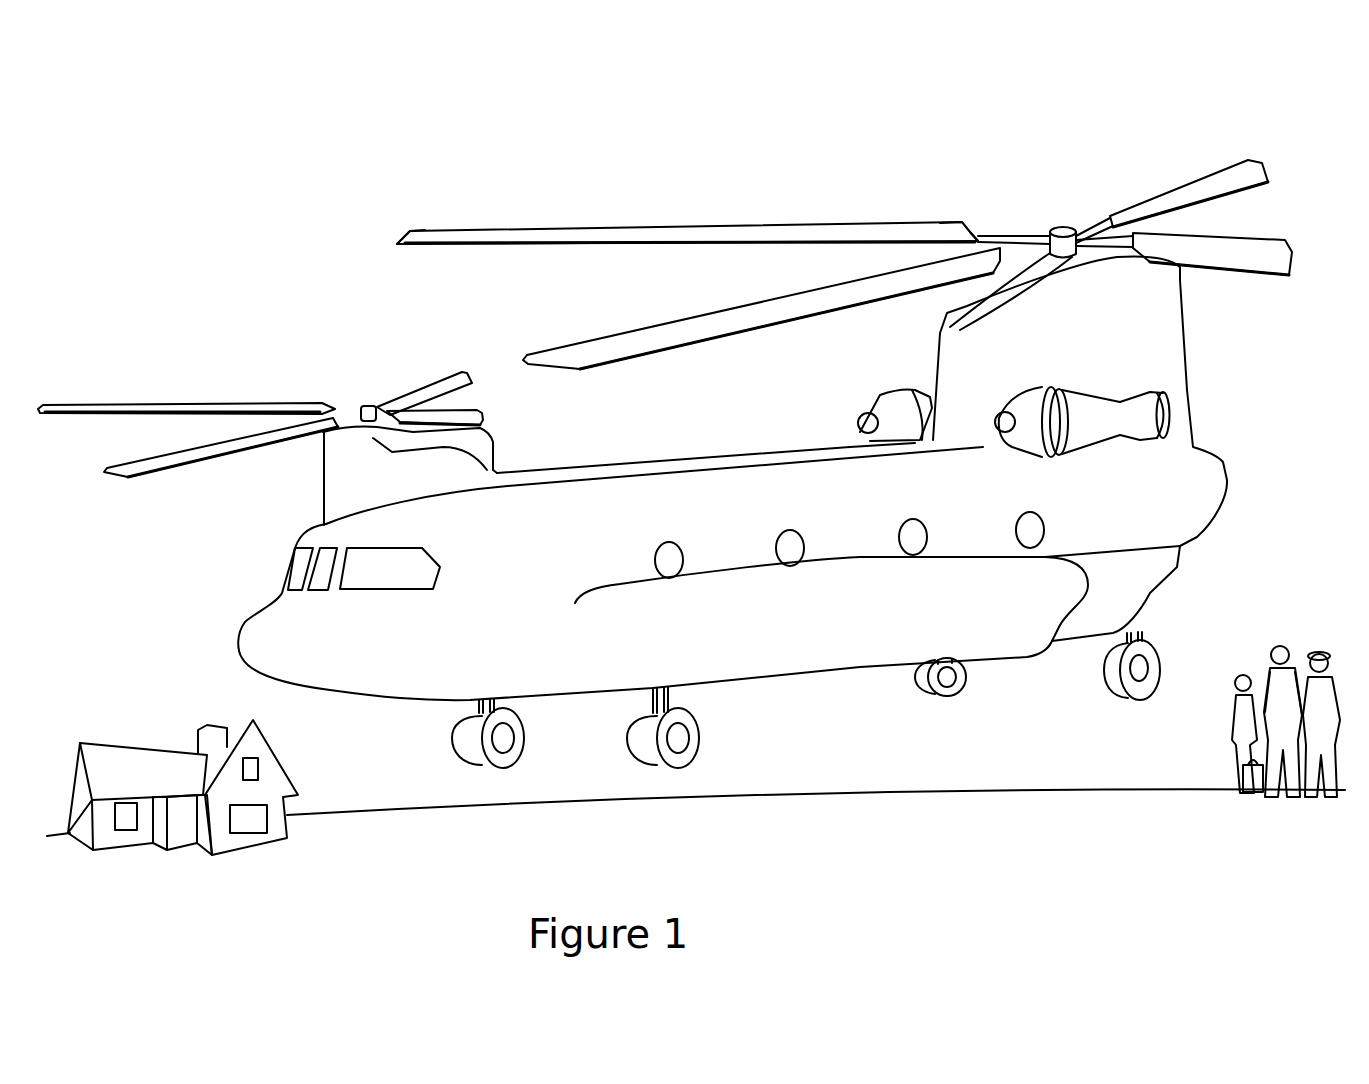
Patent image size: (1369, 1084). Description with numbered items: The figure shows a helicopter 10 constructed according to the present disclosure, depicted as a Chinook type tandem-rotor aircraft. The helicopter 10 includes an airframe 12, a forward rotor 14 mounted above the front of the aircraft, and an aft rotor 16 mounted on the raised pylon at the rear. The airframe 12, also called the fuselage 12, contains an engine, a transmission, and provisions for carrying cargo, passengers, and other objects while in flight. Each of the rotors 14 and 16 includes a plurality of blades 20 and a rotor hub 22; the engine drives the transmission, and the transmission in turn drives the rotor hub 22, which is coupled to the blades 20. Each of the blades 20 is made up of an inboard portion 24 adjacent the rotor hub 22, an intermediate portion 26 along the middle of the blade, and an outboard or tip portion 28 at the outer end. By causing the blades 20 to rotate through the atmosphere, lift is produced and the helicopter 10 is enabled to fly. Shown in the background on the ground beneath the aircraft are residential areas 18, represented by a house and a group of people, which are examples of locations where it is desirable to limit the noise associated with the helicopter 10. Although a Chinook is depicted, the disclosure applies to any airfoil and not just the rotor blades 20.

The helicopter 10 is at (158, 639).
The airframe 12 is at (805, 682).
The forward rotor 14 is at (158, 382).
The aft rotor 16 is at (1160, 120).
The residential areas 18 is at (704, 779).
The blades 20 is at (207, 460).
The rotor hub 22 is at (1062, 228).
The inboard portion 24 is at (933, 232).
The intermediate portion 26 is at (627, 232).
The outboard portion 28 is at (402, 232).